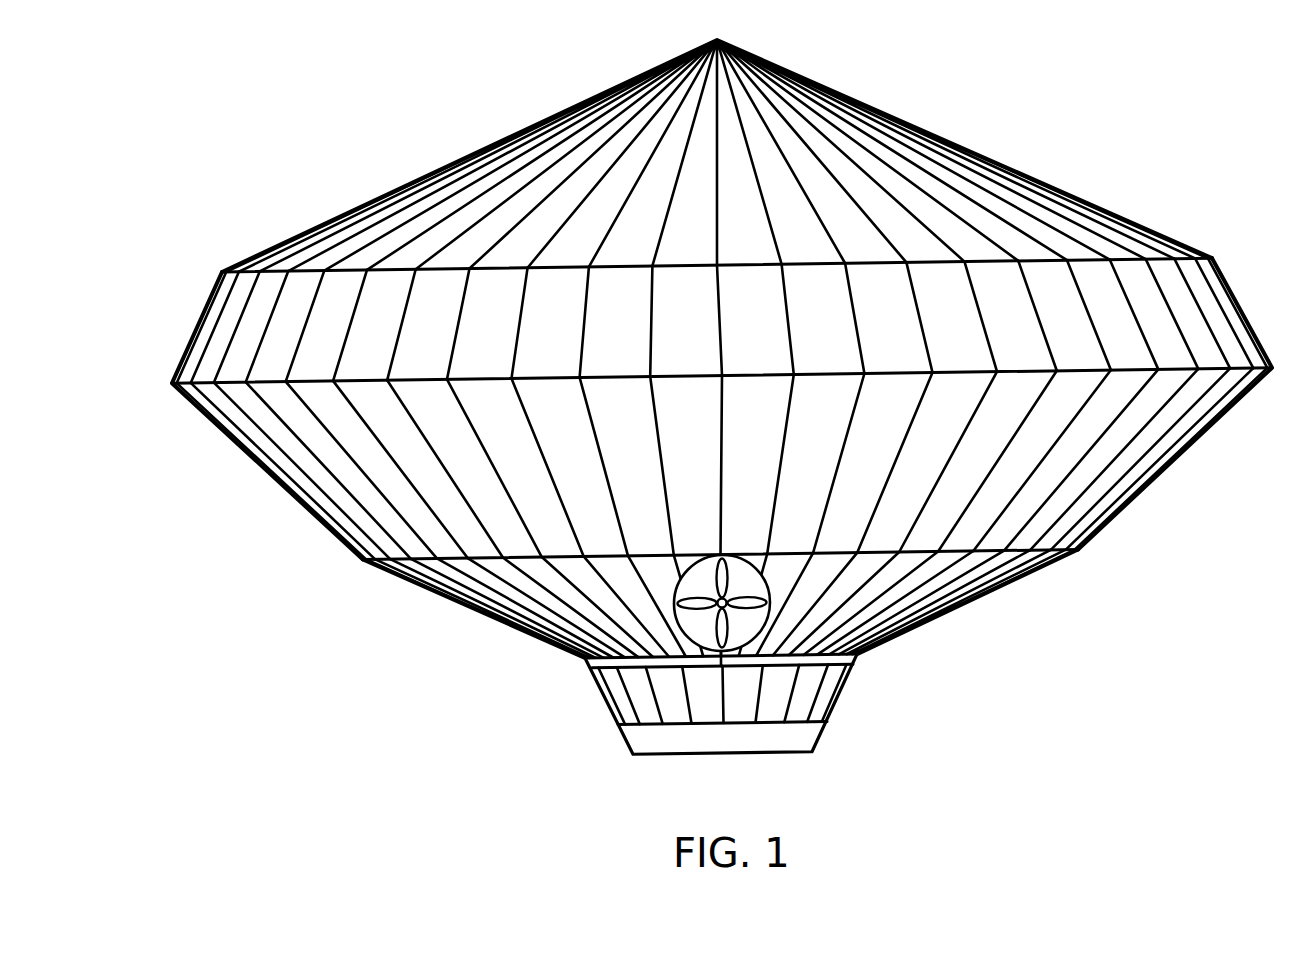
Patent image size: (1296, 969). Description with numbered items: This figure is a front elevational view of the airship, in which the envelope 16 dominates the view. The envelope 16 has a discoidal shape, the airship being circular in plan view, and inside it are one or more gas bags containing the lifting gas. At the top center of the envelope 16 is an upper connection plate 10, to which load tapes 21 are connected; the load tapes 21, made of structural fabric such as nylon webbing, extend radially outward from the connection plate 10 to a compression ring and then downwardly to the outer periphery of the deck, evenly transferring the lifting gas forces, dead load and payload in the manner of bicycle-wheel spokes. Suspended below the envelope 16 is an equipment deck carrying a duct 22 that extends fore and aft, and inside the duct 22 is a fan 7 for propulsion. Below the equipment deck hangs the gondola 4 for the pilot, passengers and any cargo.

The connection plate 10 is at (677, 97).
The envelope 16 is at (900, 212).
The load tapes 21 is at (527, 578).
The fan 7 is at (682, 612).
The duct 22 is at (690, 647).
The gondola 4 is at (788, 755).